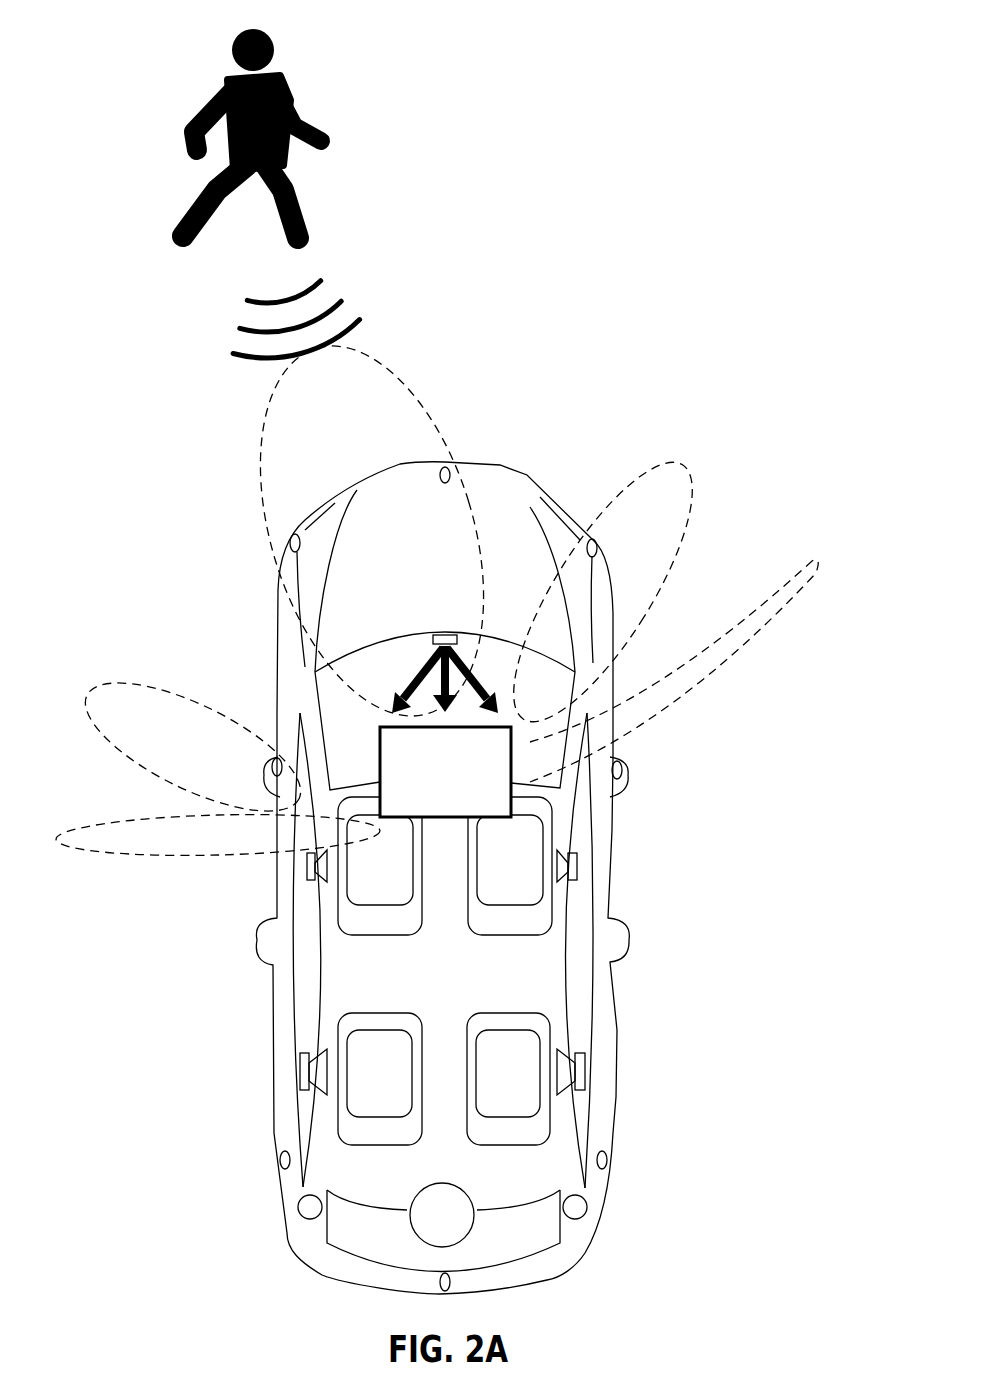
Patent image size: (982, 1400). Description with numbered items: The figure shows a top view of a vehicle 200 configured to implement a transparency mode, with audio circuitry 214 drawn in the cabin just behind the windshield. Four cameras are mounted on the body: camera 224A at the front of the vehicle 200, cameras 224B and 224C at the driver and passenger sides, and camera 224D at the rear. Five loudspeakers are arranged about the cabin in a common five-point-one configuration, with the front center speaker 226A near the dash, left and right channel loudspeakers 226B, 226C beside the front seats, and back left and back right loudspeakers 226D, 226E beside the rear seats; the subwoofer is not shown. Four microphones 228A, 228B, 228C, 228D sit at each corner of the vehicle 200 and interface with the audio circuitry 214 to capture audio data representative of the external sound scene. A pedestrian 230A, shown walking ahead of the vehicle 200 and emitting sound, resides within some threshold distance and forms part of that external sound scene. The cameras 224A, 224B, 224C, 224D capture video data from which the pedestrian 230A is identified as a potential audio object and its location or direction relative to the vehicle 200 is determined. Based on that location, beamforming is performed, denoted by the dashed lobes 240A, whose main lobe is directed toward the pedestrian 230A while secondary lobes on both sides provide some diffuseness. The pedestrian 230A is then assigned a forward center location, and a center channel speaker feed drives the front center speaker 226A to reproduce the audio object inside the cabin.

The vehicle 200 is at (693, 443).
The audio circuitry 214 is at (464, 810).
The camera 224A is at (441, 468).
The camera 224B is at (273, 760).
The camera 224C is at (621, 762).
The camera 224D is at (444, 1274).
The front center speaker 226A is at (449, 634).
The loudspeaker 226B is at (316, 864).
The loudspeaker 226C is at (561, 864).
The loudspeaker 226D is at (320, 1070).
The loudspeaker 226E is at (566, 1074).
The microphone 228A is at (291, 537).
The microphone 228B is at (597, 541).
The microphone 228C is at (283, 1152).
The microphone 228D is at (606, 1152).
The pedestrian 230A is at (261, 30).
The lobes 240A is at (393, 376).